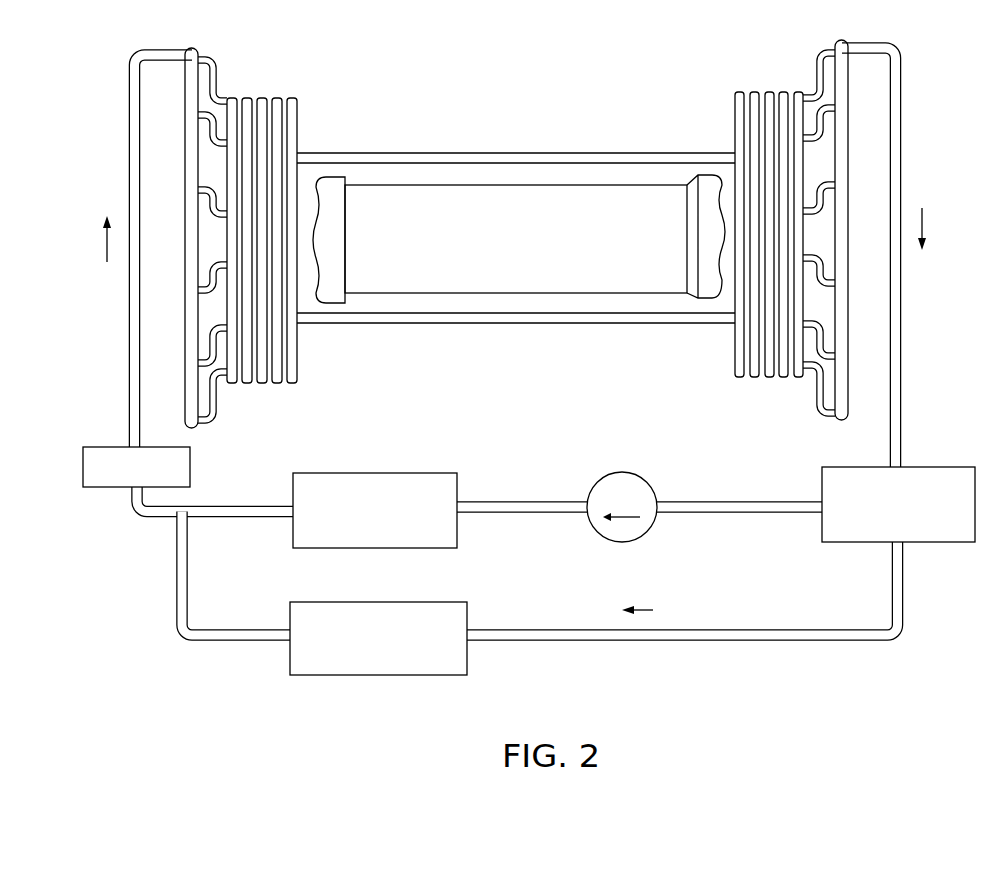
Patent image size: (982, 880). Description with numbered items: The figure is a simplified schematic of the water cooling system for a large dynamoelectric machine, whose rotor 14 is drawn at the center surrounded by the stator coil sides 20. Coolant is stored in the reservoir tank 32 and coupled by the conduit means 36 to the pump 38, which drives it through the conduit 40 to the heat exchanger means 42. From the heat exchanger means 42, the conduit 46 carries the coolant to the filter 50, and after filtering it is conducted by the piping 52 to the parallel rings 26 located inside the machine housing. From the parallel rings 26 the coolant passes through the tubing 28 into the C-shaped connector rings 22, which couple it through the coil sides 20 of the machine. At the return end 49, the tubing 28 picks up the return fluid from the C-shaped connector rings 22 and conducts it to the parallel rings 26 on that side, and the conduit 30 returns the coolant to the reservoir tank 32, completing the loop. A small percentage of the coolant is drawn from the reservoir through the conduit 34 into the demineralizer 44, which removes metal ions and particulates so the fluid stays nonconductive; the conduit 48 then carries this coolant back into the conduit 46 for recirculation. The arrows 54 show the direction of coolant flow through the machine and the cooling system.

The rotor 14 is at (540, 253).
The coil sides 20 is at (482, 152).
The C-shaped connector ring 22 is at (280, 98).
The parallel rings 26 is at (185, 274).
The tubing 28 is at (214, 72).
The conduit 30 is at (901, 132).
The reservoir tank 32 is at (922, 467).
The conduit 34 is at (903, 577).
The conduit means 36 is at (757, 497).
The pump 38 is at (598, 481).
The conduit 40 is at (552, 513).
The heat exchanger means 42 is at (434, 473).
The demineralizer 44 is at (431, 602).
The conduit 46 is at (256, 506).
The conduit 48 is at (253, 630).
The return end 49 is at (783, 417).
The filter 50 is at (112, 447).
The piping 52 is at (128, 95).
The arrows 54 is at (107, 246).